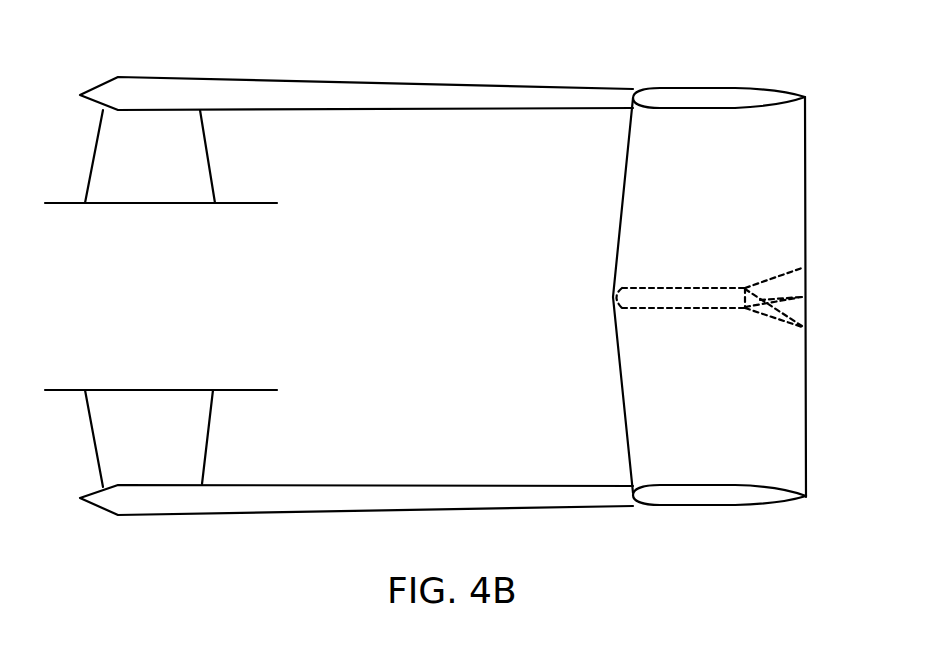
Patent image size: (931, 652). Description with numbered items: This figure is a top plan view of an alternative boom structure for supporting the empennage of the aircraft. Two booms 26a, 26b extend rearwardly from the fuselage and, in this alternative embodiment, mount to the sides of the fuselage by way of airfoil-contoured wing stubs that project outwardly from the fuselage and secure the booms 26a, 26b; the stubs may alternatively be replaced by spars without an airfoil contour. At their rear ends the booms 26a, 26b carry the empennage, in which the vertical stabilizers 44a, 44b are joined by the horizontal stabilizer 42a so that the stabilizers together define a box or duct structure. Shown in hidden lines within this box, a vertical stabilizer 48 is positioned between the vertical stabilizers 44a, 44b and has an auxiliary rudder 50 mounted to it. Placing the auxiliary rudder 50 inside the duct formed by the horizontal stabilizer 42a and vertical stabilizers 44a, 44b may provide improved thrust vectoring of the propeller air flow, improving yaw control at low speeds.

The boom 26a is at (397, 490).
The boom 26b is at (413, 107).
The first horizontal stabilizer 42a is at (787, 193).
The vertical stabilizer 44a is at (722, 498).
The vertical stabilizer 44b is at (737, 97).
The vertical stabilizer 48 is at (660, 292).
The auxiliary rudder 50 is at (767, 320).